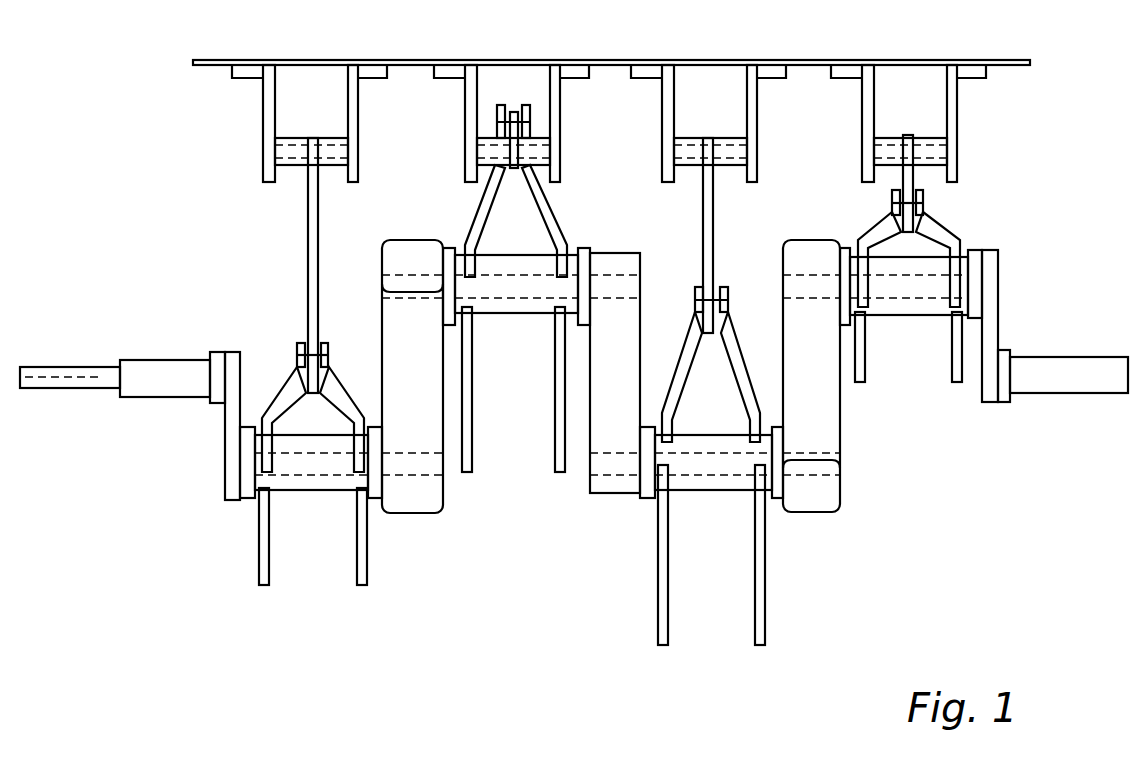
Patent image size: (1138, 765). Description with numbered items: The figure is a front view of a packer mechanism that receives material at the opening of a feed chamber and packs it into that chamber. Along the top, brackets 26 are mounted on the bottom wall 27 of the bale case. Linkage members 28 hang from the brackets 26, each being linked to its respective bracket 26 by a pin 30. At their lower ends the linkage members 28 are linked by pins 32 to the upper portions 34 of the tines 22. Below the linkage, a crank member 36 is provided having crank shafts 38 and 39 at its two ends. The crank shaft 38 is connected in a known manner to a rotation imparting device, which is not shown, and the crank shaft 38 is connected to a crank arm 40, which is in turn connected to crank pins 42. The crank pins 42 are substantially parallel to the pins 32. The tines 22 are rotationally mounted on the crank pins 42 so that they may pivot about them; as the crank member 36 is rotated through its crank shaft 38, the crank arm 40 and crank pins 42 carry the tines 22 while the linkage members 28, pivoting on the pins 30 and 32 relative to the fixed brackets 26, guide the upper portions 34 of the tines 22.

The tines 22 is at (357, 576).
The brackets 26 is at (263, 115).
The bottom wall 27 is at (620, 60).
The linkage members 28 is at (308, 238).
The pins 30 is at (275, 150).
The pins 32 is at (488, 135).
The upper portions 34 is at (340, 390).
The crank member 36 is at (145, 414).
The crank shaft 38 is at (178, 362).
The crank shaft 39 is at (1075, 365).
The crank arm 40 is at (228, 425).
The crank pins 42 is at (443, 470).